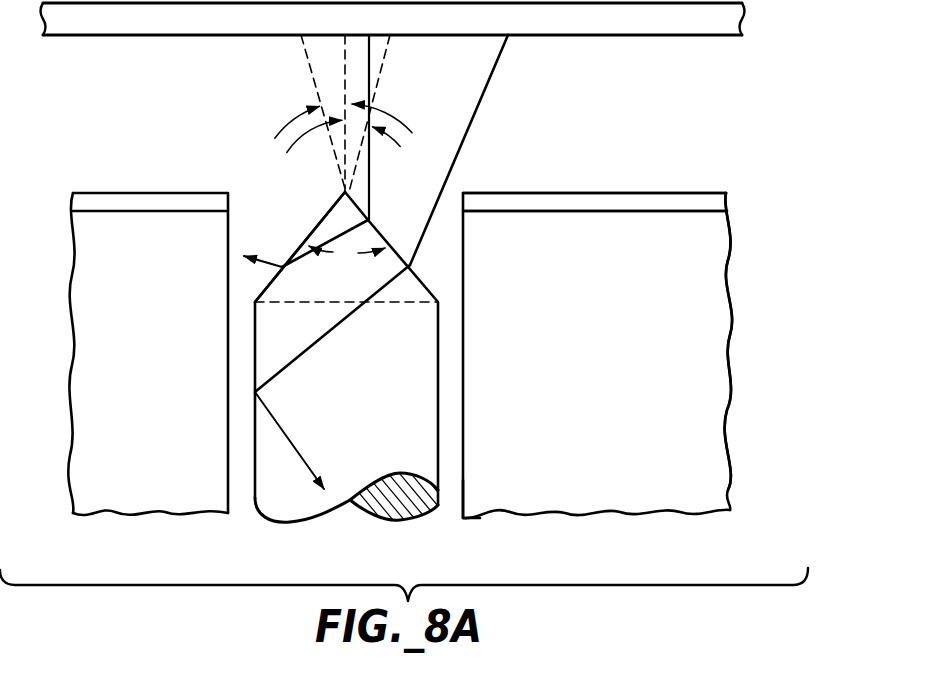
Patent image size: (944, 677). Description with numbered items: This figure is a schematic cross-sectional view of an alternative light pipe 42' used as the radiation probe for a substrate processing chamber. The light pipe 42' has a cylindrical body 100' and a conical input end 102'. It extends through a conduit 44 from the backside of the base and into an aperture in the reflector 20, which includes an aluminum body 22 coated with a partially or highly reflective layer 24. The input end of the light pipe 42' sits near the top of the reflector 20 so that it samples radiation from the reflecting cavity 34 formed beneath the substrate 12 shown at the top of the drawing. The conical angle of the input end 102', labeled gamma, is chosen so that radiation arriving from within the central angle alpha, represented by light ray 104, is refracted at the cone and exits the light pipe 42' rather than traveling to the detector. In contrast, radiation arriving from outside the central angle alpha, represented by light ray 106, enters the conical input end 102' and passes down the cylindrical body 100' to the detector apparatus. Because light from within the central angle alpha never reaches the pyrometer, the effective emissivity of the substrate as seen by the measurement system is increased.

The substrate bar 12 is at (658, 35).
The reflector 20 is at (766, 357).
The aluminum body 22 is at (730, 273).
The reflective layer 24 is at (725, 203).
The reflecting cavity 34 is at (185, 126).
The light pipe 42' is at (159, 372).
The conduit 44 is at (462, 500).
The cylindrical body 100' is at (357, 361).
The conical input end 102' is at (295, 247).
The light ray 104 is at (370, 83).
The light ray 106 is at (492, 85).